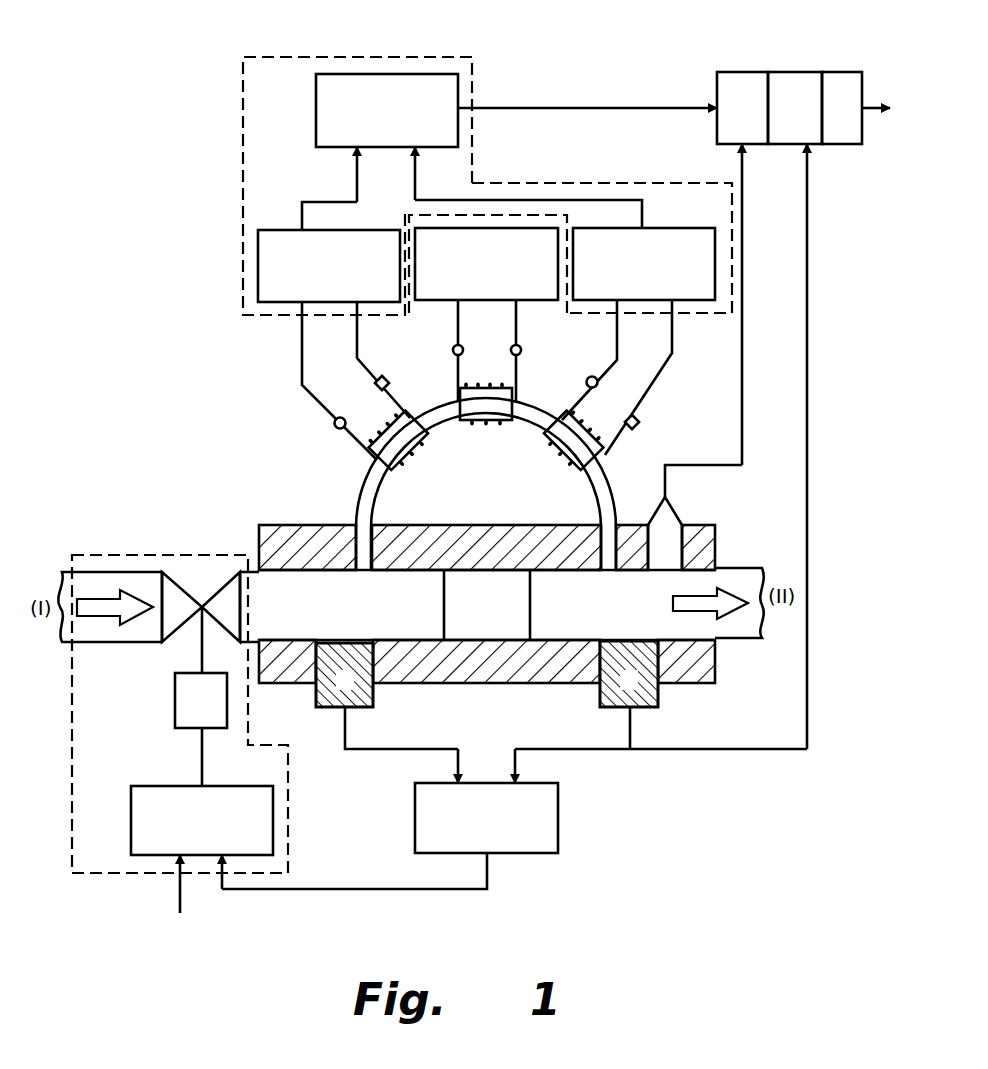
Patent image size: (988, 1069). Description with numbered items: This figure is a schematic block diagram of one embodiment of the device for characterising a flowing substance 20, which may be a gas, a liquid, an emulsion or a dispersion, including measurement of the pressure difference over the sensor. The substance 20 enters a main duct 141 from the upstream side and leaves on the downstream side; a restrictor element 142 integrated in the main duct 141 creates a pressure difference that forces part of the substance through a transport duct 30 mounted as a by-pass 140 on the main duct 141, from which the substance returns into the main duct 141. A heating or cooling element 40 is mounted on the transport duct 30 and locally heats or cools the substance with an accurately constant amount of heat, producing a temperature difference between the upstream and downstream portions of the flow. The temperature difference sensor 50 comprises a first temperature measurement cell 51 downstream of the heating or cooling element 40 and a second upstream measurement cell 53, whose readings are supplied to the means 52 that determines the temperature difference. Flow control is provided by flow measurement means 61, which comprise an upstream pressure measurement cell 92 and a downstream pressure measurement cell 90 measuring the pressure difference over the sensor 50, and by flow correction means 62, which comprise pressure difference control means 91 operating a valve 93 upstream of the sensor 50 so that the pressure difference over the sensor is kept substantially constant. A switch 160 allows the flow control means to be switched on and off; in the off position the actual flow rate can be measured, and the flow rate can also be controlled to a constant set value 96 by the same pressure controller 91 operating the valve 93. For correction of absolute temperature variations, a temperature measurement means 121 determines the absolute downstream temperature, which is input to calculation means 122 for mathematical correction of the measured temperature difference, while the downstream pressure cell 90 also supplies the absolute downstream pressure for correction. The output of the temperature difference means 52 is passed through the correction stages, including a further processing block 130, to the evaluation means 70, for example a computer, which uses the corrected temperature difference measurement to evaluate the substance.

The flowing substance 20 is at (93, 618).
The transport duct 30 is at (374, 506).
The heating or cooling element 40 is at (425, 302).
The temperature difference sensor 50 is at (515, 183).
The first temperature measurement cell 51 is at (680, 228).
The means to determine a temperature difference 52 is at (393, 74).
The second upstream measurement cell 53 is at (278, 230).
The flow measurement means 61 is at (558, 825).
The flow correction means 62 is at (102, 873).
The evaluation means 70 is at (855, 72).
The downstream pressure measurement cell 90 is at (600, 702).
The pressure difference control means 91 is at (273, 828).
The upstream pressure measurement cell 92 is at (373, 702).
The valve 93 is at (175, 572).
The constant set value 96 is at (181, 895).
The temperature measurement means 121 is at (680, 510).
The calculation means 122 is at (732, 72).
The processing unit 130 is at (790, 72).
The by-pass 140 is at (366, 474).
The main duct 141 is at (308, 598).
The restrictor element 142 is at (483, 603).
The switch 160 is at (175, 725).